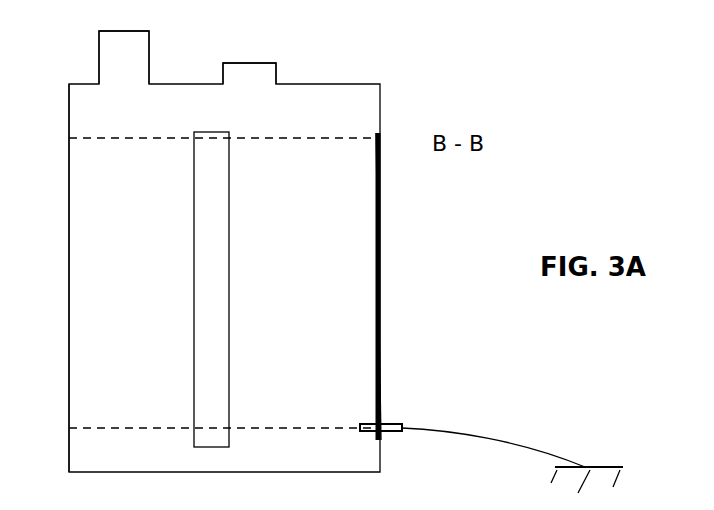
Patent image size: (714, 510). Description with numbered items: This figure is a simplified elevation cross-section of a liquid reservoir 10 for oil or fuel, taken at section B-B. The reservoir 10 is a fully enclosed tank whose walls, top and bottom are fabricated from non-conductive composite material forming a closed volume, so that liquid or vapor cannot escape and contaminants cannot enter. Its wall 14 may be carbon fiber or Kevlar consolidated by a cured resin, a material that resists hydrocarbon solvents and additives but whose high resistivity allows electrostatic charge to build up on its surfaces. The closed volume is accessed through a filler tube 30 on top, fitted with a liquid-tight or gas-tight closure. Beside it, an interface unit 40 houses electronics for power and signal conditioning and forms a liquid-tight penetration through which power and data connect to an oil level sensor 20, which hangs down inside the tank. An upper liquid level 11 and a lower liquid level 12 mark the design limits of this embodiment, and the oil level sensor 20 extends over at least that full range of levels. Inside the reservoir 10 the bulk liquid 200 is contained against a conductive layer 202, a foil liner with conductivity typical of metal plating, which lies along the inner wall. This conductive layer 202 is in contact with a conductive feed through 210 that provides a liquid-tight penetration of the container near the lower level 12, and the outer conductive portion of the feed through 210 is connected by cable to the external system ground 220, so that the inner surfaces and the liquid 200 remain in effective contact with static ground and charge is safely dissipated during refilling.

The reservoir 10 is at (60, 238).
The upper liquid level 11 is at (152, 138).
The lower liquid level 12 is at (107, 428).
The wall 14 is at (69, 330).
The oil level sensor 20 is at (230, 250).
The filler tube 30 is at (150, 53).
The interface unit 40 is at (267, 62).
The liquid 200 is at (307, 371).
The conductive layer 202 is at (377, 280).
The conductive feed through 210 is at (395, 410).
The system ground 220 is at (591, 467).